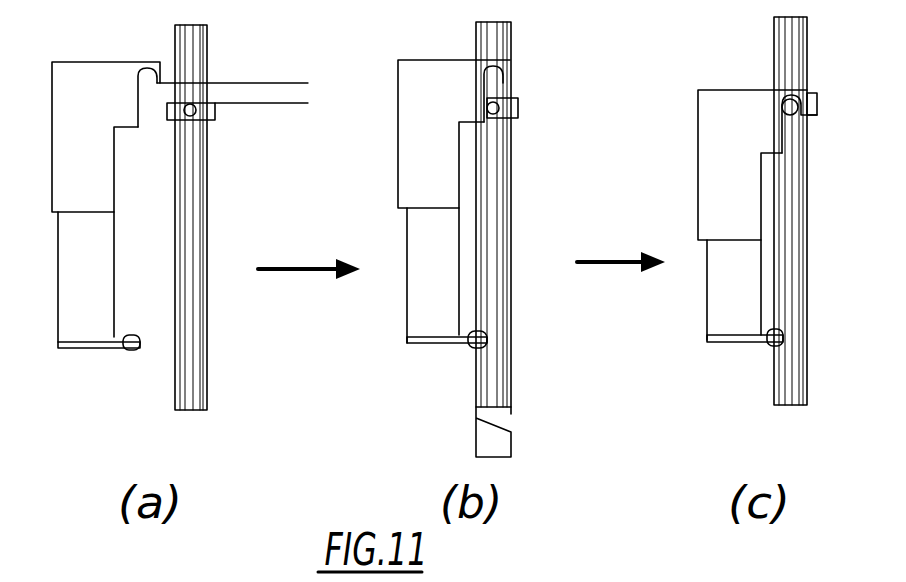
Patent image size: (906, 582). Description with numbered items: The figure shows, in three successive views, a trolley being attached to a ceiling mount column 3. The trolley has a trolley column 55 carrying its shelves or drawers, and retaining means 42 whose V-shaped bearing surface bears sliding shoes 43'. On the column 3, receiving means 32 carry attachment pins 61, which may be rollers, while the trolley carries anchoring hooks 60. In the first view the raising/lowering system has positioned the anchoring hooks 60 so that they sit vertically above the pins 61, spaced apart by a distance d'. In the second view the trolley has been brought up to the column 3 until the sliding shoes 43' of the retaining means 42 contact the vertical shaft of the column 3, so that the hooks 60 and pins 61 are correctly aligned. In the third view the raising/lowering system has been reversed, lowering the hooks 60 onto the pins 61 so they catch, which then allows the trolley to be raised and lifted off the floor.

The column 3 is at (193, 382).
The anchoring hooks 60 is at (157, 52).
The attachment pins 61 is at (181, 122).
The receiving means 32 is at (222, 124).
The trolley column 55 is at (95, 307).
The retaining means 42 is at (98, 360).
The sliding shoes 43' is at (441, 383).
The gap distance d' is at (232, 70).